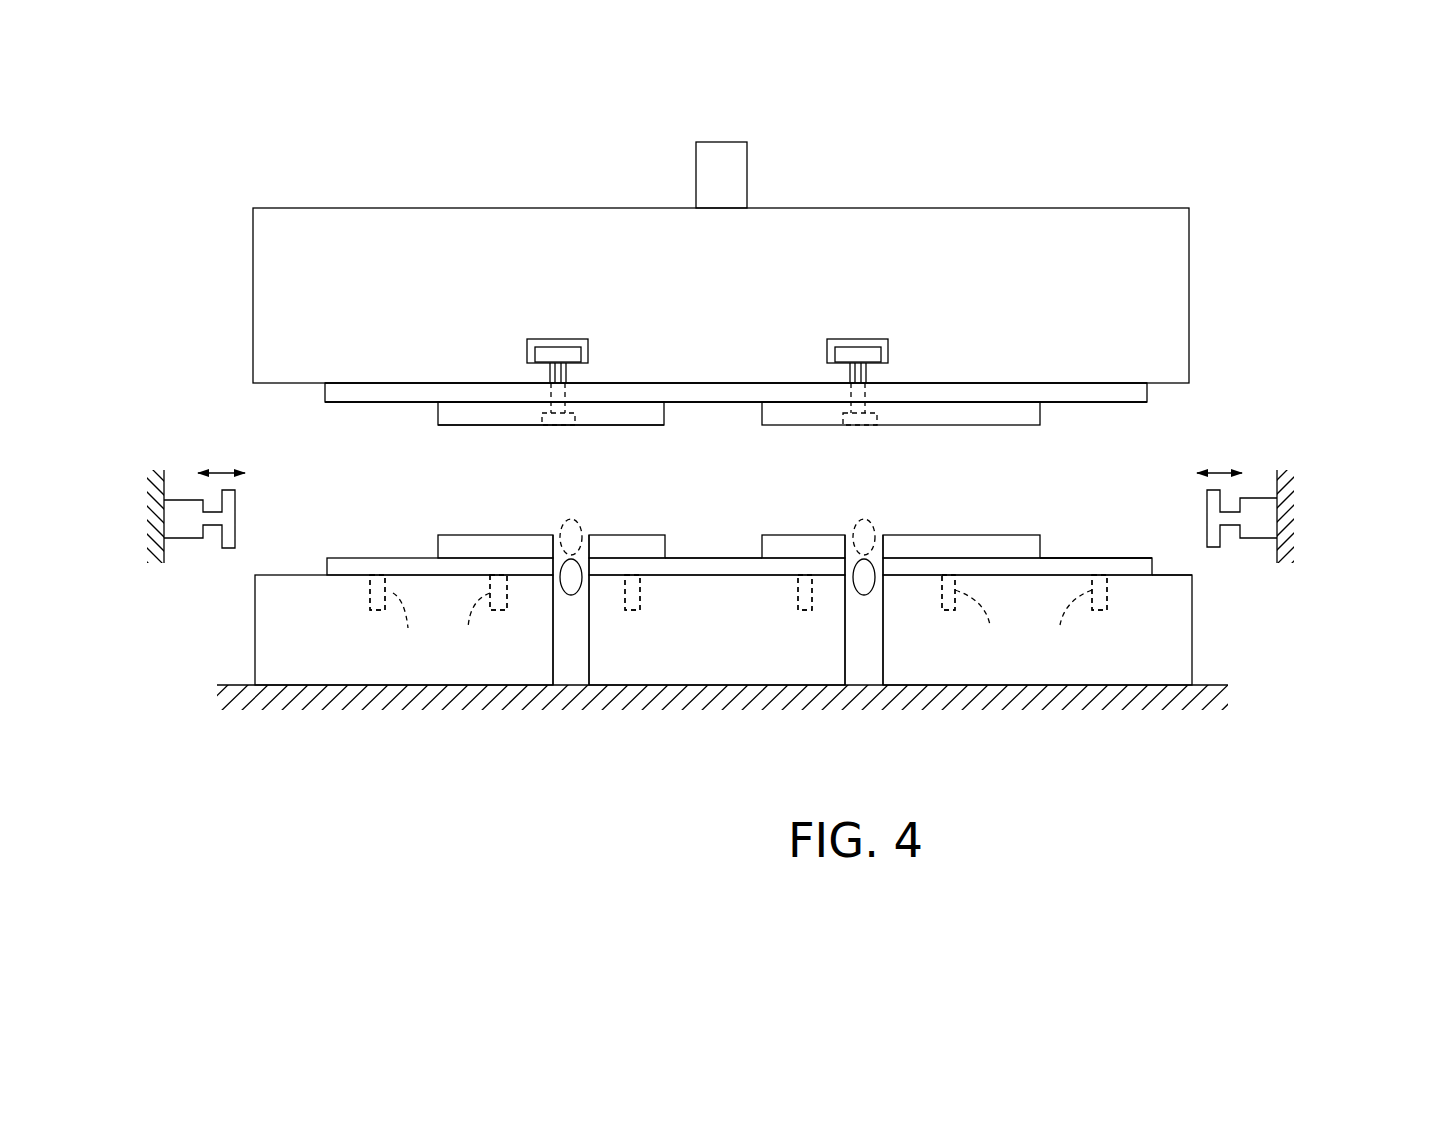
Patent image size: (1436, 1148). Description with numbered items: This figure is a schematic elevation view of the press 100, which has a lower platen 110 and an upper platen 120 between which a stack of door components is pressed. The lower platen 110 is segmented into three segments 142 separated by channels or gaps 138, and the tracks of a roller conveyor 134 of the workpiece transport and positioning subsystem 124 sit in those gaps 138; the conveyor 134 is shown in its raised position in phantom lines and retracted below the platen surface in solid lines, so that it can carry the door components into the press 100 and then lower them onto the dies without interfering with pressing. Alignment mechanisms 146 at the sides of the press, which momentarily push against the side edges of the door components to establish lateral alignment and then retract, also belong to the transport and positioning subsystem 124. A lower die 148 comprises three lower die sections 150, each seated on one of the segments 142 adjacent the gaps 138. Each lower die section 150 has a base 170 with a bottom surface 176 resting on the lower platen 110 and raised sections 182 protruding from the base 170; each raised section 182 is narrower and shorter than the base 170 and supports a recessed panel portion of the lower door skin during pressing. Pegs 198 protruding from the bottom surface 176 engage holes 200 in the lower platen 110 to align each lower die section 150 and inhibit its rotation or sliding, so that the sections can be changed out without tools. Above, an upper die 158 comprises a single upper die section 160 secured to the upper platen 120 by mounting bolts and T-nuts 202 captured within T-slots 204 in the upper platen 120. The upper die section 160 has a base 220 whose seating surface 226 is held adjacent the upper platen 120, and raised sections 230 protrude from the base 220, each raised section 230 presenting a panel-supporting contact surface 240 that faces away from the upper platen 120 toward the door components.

The press 100 is at (1275, 252).
The lower platen 110 is at (1205, 642).
The upper platen 120 is at (1175, 328).
The workpiece transport and positioning subsystem 124 is at (1323, 485).
The roller conveyor 134 is at (568, 590).
The gaps 138 is at (571, 660).
The segments 142 is at (273, 637).
The alignment mechanism 146 is at (180, 468).
The lower die 148 is at (1103, 545).
The lower die sections 150 is at (342, 560).
The upper die 158 is at (1082, 409).
The upper die section 160 is at (1082, 409).
The base 170 is at (683, 557).
The bottom surface 176 is at (1128, 575).
The raised section 182 is at (468, 540).
The pegs 198 is at (738, 610).
The holes 200 is at (738, 626).
The T-nuts 202 is at (572, 352).
The T-slots 204 is at (545, 338).
The base 220 is at (373, 396).
The seating surface 226 is at (1018, 384).
The raised section 230 is at (503, 422).
The panel-supporting contact surface 240 is at (603, 427).